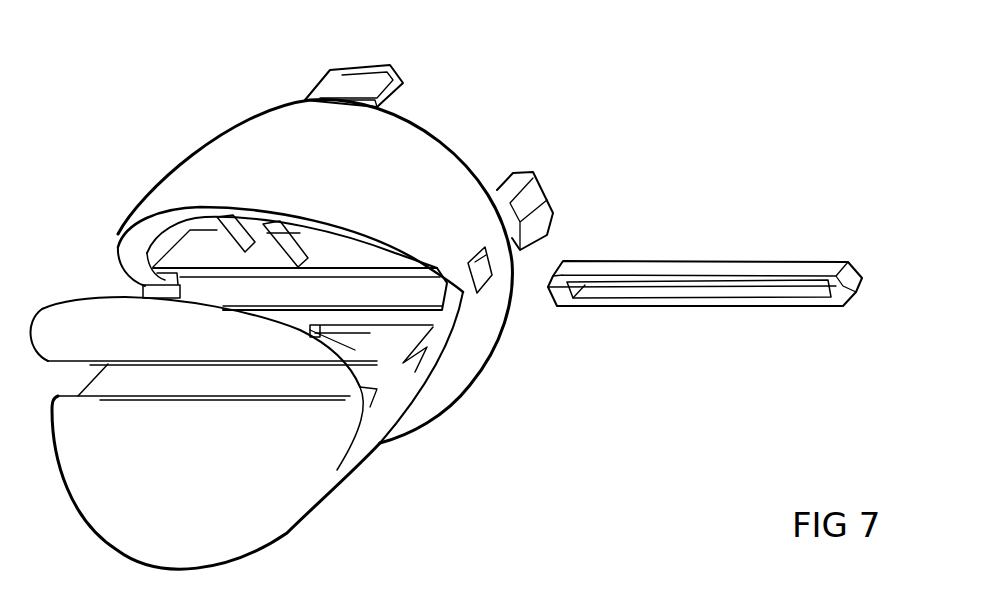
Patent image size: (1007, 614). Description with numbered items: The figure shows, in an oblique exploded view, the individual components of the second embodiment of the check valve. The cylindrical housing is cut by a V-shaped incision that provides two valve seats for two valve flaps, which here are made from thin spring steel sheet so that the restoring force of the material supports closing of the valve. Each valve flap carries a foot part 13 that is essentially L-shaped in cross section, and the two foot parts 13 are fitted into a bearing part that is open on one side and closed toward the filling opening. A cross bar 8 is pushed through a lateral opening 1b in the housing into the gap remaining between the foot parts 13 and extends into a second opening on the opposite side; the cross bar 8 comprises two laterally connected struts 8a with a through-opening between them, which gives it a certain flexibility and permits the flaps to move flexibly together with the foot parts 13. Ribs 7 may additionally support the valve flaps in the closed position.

The lateral opening 1b is at (480, 270).
The rib 7 is at (237, 222).
The cross bar 8 is at (750, 245).
The strut 8a is at (647, 268).
The foot part 13 is at (360, 387).